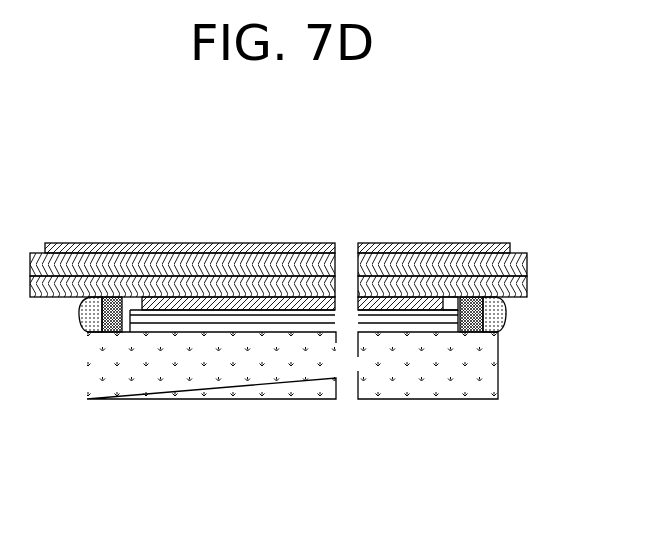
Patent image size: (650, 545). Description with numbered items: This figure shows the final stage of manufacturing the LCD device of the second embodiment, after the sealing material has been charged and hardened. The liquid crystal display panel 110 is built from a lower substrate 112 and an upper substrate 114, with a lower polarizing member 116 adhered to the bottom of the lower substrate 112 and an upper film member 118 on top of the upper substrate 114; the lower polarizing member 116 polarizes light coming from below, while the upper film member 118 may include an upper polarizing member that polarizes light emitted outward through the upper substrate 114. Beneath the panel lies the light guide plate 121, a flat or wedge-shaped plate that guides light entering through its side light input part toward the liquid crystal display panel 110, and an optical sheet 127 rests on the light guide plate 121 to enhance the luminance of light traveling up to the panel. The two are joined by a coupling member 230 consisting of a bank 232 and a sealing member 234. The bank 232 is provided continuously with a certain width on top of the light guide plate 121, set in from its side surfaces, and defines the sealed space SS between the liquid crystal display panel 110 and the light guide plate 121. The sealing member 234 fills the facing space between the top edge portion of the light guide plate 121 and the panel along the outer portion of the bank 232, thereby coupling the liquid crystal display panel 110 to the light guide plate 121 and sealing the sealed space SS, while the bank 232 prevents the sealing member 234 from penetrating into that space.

The liquid crystal display panel 110 is at (205, 168).
The lower substrate 112 is at (282, 292).
The upper substrate 114 is at (242, 266).
The lower polarizing member 116 is at (326, 301).
The upper film member 118 is at (204, 247).
The light guide plate 121 is at (492, 363).
The optical sheet 127 is at (273, 313).
The coupling member 230 is at (421, 467).
The bank 232 is at (467, 331).
The sealing member 234 is at (491, 331).
The sealed space SS is at (453, 302).